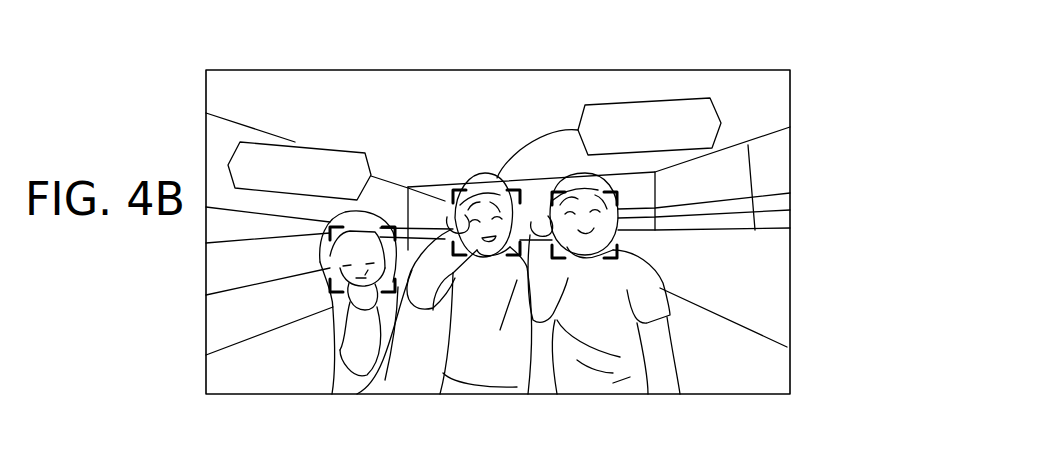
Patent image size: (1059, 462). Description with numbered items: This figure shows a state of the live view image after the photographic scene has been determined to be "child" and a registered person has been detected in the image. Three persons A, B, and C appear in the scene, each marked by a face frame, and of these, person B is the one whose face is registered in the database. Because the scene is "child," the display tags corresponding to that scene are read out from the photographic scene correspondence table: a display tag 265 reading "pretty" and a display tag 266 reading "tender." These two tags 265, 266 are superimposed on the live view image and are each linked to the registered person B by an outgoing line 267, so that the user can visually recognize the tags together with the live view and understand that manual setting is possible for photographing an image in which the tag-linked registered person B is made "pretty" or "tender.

The display tag 265 is at (713, 103).
The display tag 266 is at (318, 143).
The outgoing line 267 is at (421, 200).
The person A is at (378, 397).
The registered person B is at (497, 397).
The person C is at (600, 397).